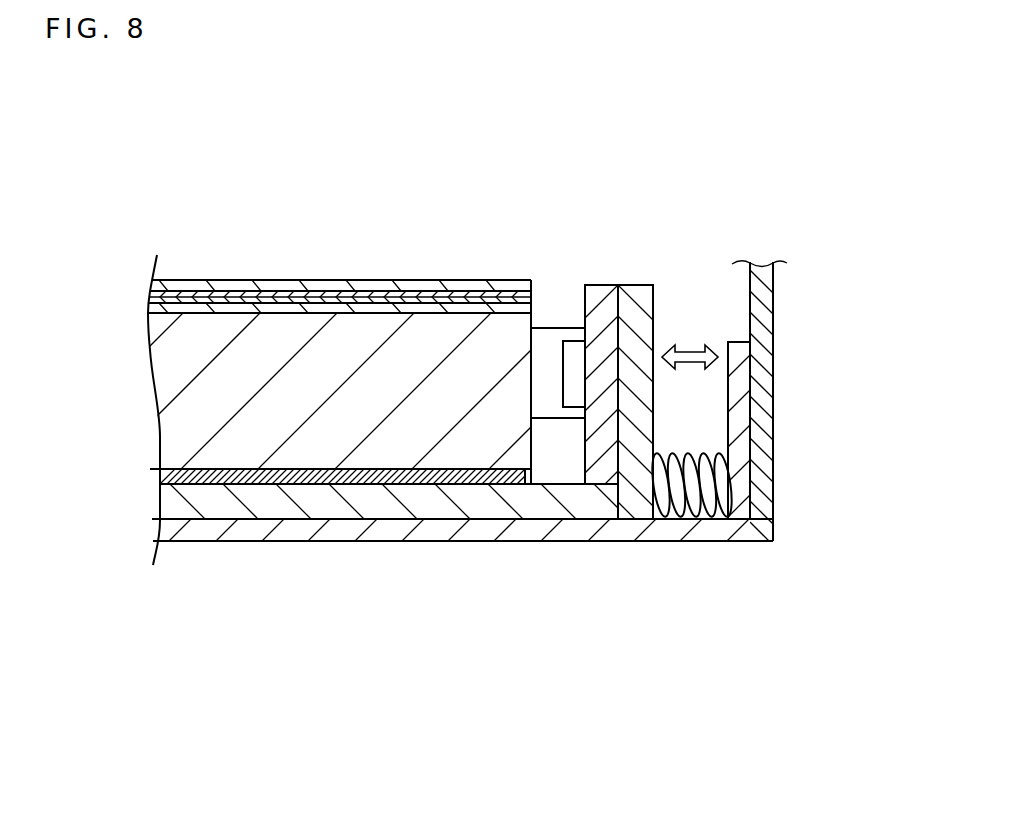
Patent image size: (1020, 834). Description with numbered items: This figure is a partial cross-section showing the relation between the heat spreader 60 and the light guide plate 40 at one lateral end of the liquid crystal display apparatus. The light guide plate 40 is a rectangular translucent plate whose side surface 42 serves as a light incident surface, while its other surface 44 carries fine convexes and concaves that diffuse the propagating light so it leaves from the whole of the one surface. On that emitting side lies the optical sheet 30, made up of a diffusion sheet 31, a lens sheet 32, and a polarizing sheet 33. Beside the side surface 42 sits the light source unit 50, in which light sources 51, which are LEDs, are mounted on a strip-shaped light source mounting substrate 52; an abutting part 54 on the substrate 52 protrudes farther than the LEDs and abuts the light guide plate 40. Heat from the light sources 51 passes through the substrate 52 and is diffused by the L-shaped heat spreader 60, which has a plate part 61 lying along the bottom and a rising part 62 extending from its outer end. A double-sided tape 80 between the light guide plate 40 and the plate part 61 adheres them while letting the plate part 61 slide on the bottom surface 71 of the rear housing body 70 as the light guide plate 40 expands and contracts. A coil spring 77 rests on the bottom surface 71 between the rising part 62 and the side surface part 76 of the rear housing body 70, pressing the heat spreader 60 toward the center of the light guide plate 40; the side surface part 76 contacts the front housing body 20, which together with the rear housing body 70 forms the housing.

The front housing body 20 is at (763, 463).
The optical sheet 30 is at (339, 222).
The diffusion sheet 31 is at (228, 198).
The lens sheet 32 is at (333, 297).
The polarizing sheet 33 is at (277, 285).
The light guide plate 40 is at (170, 370).
The side surface 42 is at (532, 323).
The other surface 44 is at (193, 468).
The light source unit 50 is at (580, 485).
The light source 51 is at (575, 395).
The light source mounting substrate 52 is at (602, 465).
The abutting part 54 is at (565, 328).
The heat spreader 60 is at (460, 512).
The plate part 61 is at (277, 512).
The rising part 62 is at (647, 332).
The rear housing body 70 is at (382, 533).
The bottom surface 71 is at (683, 504).
The side surface part 76 is at (740, 402).
The spring 77 is at (693, 452).
The double-sided tape 80 is at (218, 490).